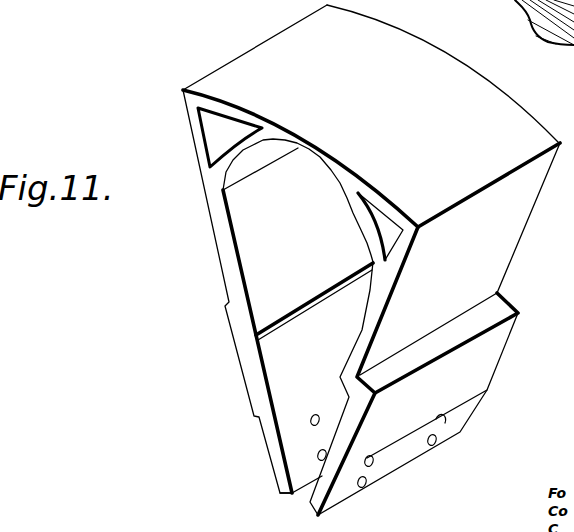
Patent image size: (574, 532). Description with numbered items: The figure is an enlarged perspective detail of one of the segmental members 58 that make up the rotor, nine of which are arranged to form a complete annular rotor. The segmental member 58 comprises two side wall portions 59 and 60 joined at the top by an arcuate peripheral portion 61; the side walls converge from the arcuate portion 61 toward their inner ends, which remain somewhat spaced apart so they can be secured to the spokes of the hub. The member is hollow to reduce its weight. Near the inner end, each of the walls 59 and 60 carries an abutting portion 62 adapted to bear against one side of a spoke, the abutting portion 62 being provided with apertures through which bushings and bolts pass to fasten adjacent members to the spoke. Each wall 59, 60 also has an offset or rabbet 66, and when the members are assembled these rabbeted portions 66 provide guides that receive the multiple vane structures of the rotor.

The segmental member 58 is at (215, 85).
The side wall portion 59 is at (228, 265).
The side wall portion 60 is at (397, 259).
The arcuate peripheral portion 61 is at (505, 97).
The abutting portion 62 is at (320, 502).
The offset or rabbet 66 is at (493, 278).